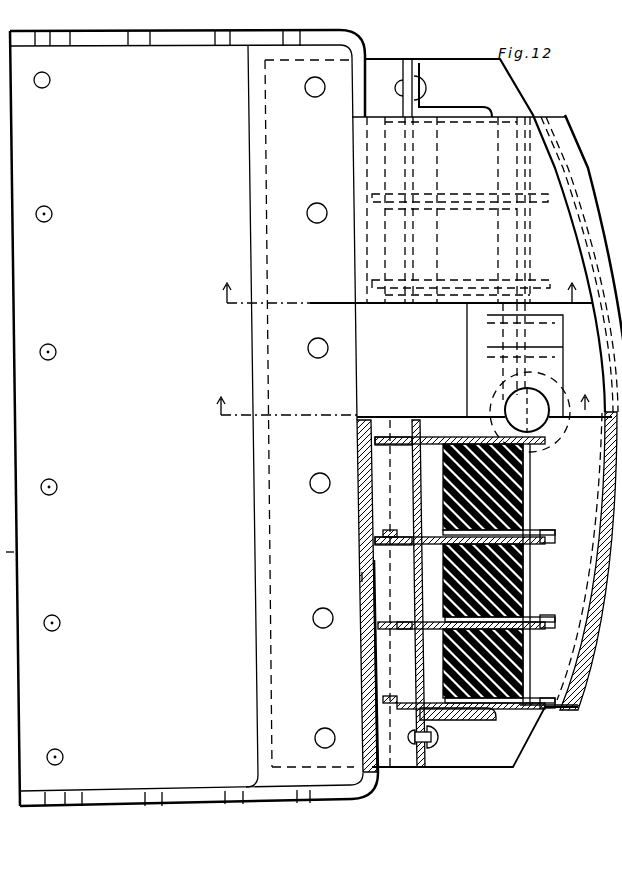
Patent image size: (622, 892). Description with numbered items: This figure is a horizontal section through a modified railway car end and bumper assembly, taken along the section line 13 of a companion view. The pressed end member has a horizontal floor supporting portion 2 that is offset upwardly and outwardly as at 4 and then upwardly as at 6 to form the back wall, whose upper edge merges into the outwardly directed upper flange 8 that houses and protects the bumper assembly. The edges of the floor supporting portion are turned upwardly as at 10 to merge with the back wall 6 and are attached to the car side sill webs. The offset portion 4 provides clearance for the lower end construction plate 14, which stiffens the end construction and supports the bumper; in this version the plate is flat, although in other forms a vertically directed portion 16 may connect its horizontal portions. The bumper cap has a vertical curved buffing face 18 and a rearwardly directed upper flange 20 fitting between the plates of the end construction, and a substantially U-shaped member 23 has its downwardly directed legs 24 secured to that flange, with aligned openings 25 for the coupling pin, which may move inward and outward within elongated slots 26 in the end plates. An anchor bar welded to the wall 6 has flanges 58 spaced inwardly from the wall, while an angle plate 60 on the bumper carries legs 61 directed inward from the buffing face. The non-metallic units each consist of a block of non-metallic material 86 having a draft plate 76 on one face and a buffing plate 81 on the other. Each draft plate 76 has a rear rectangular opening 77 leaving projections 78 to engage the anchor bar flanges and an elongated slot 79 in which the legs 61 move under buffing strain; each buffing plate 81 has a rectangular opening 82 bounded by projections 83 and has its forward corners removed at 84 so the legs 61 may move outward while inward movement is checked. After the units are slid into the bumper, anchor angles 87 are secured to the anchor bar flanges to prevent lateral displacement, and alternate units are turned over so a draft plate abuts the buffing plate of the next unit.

The horizontal floor supporting portion 2 is at (194, 418).
The upwardly and outwardly offset portion 4 is at (278, 678).
The back wall 6 is at (352, 125).
The outwardly directed upper flange 8 is at (582, 408).
The upwardly directed edge portion 10 is at (121, 40).
The section line 13 is at (410, 394).
The lower end construction plate 14 is at (524, 763).
The vertically directed portion 16 is at (7, 551).
The vertical curved buffing face 18 is at (583, 663).
The upper flange 20 is at (553, 140).
The U-shaped member 23 is at (557, 371).
The downwardly directed legs 24 is at (553, 333).
The aligned openings 25 is at (523, 410).
The elongated slots 26 is at (493, 422).
The flanges 58 is at (362, 577).
The angle plate 60 is at (556, 292).
The legs 61 is at (532, 497).
The draft plates 76 is at (455, 200).
The rectangular opening 77 is at (400, 440).
The projections 78 is at (360, 443).
The elongated slot 79 is at (545, 647).
The buffing plates 81 is at (478, 123).
The rectangular opening 82 is at (428, 535).
The projections 83 is at (385, 535).
The removed forward corners 84 is at (538, 531).
The block of non-metallic material 86 is at (531, 481).
The anchor angles 87 is at (423, 108).